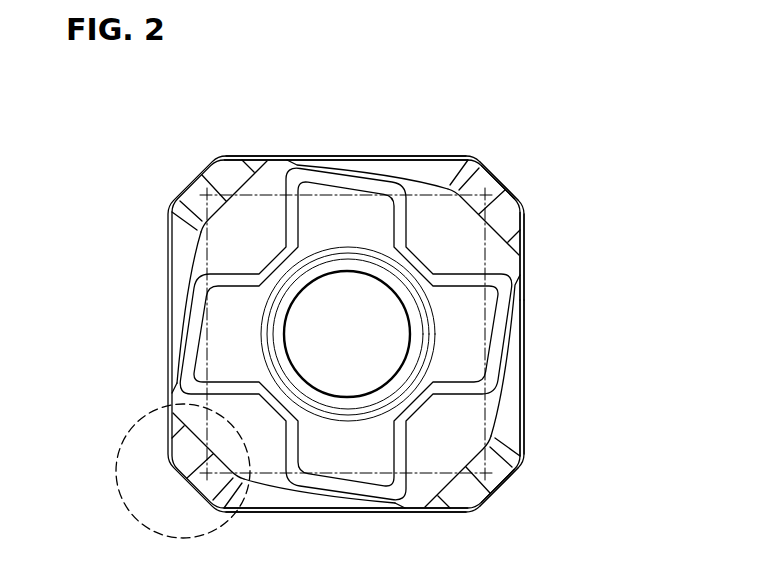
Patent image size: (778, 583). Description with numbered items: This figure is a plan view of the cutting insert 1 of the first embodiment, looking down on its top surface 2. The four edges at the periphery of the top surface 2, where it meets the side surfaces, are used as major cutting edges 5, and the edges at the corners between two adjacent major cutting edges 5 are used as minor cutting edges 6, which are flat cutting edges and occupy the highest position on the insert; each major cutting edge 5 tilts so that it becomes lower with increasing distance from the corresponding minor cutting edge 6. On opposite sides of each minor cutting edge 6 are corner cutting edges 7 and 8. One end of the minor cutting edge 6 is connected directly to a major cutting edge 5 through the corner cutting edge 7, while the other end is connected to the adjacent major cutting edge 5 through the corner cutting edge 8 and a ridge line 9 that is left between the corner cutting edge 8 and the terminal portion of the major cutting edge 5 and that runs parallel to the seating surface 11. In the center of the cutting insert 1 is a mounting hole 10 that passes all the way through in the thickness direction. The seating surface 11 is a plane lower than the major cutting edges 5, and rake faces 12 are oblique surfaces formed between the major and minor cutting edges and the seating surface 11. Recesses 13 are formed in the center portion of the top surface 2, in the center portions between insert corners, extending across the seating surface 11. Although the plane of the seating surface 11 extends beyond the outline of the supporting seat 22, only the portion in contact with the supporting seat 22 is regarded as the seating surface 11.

The cutting insert 1 is at (420, 151).
The top surface 2 is at (527, 206).
The major cutting edge 5 is at (350, 158).
The minor cutting edge 6 is at (506, 197).
The corner cutting edge 7 is at (525, 467).
The corner cutting edge 8 is at (483, 510).
The ridge line 9 is at (164, 398).
The mounting hole 10 is at (310, 334).
The seating surface 11 is at (248, 228).
The rake face 12 is at (486, 183).
The recess 13 is at (468, 326).
The supporting seat 22 is at (190, 251).